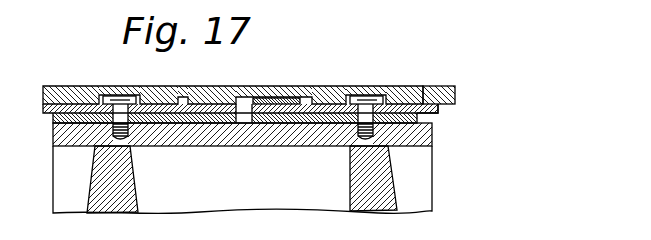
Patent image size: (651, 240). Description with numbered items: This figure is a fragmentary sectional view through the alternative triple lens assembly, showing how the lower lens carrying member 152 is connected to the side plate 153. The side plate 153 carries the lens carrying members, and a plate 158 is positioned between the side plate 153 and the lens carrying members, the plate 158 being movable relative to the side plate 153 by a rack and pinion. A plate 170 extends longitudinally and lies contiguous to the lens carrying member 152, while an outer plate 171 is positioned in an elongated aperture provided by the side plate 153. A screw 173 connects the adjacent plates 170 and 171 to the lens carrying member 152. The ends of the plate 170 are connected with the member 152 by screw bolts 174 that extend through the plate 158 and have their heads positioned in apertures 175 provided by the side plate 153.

The lower lens carrying member 152 is at (303, 140).
The side plate 153 is at (320, 90).
The plate 158 is at (440, 112).
The plate 170 is at (425, 87).
The outer plate 171 is at (291, 98).
The screw 173 is at (239, 147).
The screw bolt 174 is at (116, 96).
The aperture 175 is at (147, 95).